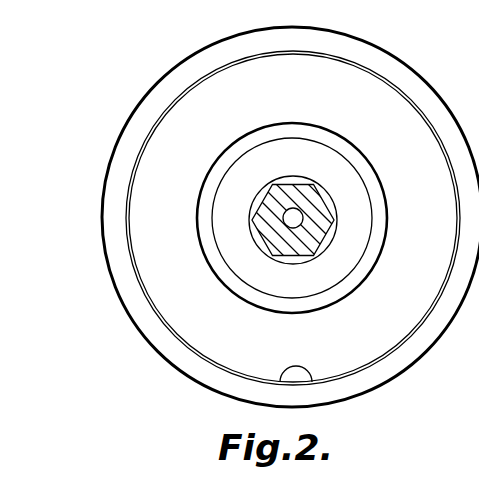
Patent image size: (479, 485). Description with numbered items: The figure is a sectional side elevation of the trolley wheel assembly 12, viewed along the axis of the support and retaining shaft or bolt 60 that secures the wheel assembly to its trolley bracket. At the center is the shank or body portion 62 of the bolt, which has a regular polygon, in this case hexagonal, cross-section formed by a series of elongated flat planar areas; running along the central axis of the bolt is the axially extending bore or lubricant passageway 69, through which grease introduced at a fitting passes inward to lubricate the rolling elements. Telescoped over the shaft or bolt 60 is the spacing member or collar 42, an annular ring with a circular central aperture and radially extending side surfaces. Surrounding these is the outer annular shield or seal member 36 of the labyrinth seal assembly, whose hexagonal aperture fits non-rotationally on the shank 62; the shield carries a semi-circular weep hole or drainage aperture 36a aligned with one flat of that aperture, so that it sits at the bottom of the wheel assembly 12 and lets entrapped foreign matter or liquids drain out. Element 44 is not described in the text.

The trolley wheel assembly 12 is at (290, 216).
The outer annular shield or seal member 36 is at (292, 102).
The semi-circular weep hole or drainage aperture 36a is at (303, 367).
The spacing member or collar 42 is at (333, 272).
The hub 44 is at (293, 262).
The support and retaining shaft or bolt 60 is at (293, 184).
The shank or body portion 62 is at (313, 238).
The axially extending bore or lubricant passageway 69 is at (286, 216).